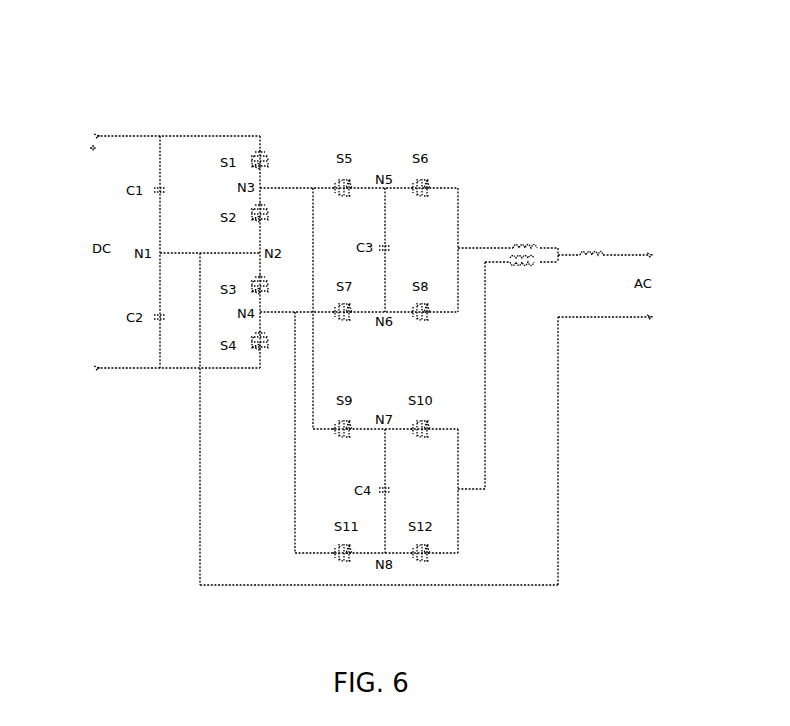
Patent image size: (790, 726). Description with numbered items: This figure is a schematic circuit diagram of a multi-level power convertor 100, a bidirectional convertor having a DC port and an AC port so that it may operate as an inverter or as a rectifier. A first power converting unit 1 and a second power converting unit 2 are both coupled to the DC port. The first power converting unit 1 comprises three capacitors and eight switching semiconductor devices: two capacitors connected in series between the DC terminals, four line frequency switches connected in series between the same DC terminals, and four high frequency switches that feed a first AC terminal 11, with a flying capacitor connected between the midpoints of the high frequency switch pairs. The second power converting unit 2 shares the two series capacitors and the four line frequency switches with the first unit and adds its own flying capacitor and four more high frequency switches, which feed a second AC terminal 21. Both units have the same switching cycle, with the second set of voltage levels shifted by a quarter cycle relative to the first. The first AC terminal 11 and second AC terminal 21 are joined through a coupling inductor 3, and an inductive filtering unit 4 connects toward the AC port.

The multi-level power convertor 100 is at (139, 76).
The first power converting unit 1 is at (303, 180).
The first AC terminal 11 is at (481, 246).
The second power converting unit 2 is at (283, 486).
The second AC terminal 21 is at (486, 500).
The coupling inductor 3 is at (527, 244).
The inductive filtering unit 4 is at (589, 252).